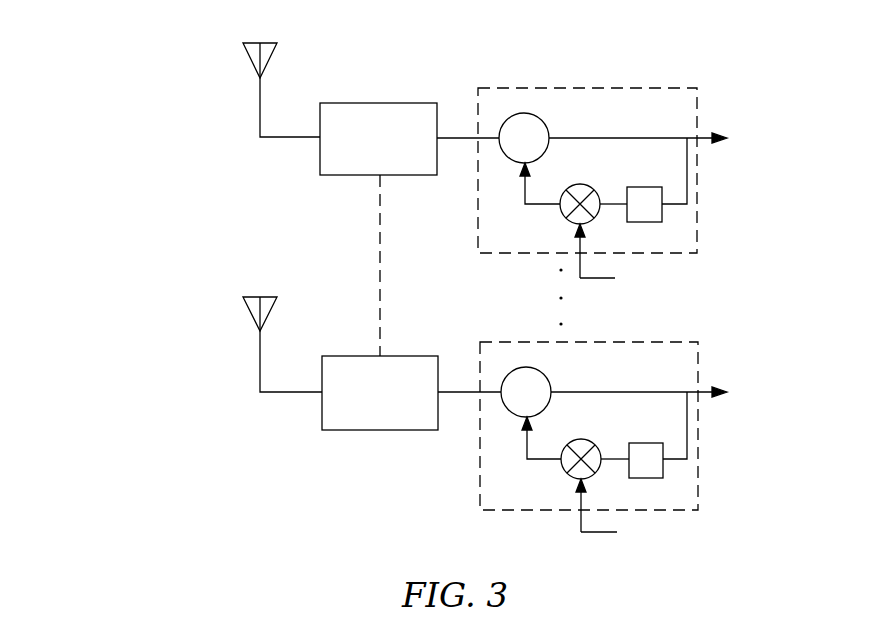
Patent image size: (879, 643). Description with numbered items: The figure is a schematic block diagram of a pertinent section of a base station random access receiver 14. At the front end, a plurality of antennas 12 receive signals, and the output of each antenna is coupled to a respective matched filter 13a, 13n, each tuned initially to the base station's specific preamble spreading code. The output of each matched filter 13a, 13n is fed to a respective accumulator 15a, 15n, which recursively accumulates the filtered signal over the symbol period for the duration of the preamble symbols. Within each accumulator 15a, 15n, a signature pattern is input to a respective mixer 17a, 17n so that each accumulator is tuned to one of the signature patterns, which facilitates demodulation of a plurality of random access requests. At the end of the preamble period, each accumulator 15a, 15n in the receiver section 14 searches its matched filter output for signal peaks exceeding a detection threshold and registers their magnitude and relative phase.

The antenna 12 is at (260, 97).
The matched filter a 13a is at (363, 103).
The matched filter n 13n is at (390, 430).
The base station random access receiver section 14 is at (165, 205).
The accumulator a 15a is at (610, 189).
The accumulator n 15n is at (611, 444).
The mixer a 17a is at (568, 220).
The mixer n 17n is at (568, 474).